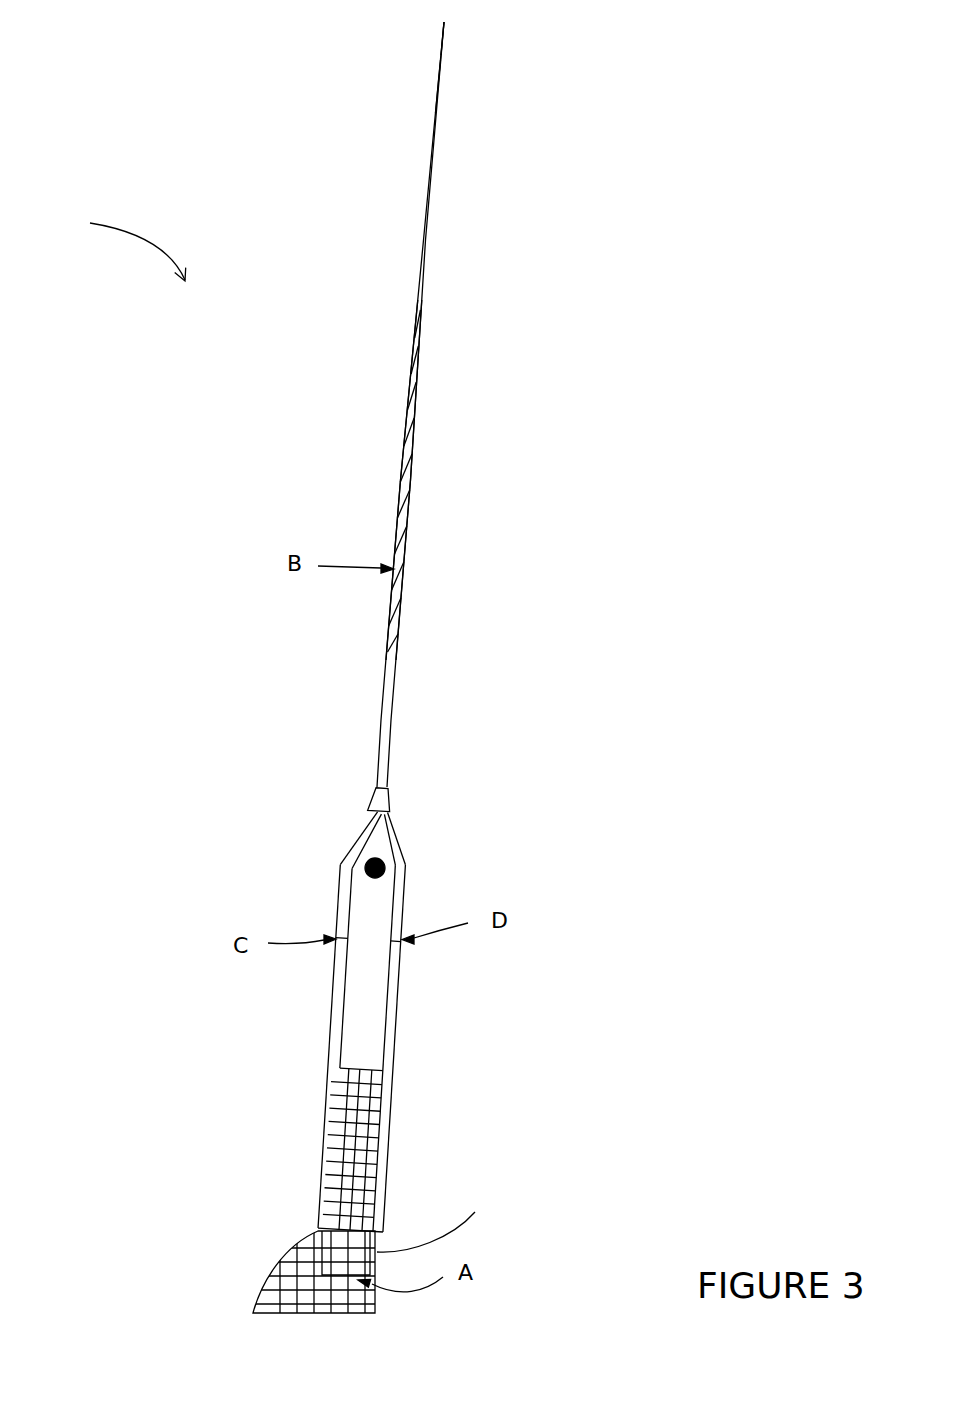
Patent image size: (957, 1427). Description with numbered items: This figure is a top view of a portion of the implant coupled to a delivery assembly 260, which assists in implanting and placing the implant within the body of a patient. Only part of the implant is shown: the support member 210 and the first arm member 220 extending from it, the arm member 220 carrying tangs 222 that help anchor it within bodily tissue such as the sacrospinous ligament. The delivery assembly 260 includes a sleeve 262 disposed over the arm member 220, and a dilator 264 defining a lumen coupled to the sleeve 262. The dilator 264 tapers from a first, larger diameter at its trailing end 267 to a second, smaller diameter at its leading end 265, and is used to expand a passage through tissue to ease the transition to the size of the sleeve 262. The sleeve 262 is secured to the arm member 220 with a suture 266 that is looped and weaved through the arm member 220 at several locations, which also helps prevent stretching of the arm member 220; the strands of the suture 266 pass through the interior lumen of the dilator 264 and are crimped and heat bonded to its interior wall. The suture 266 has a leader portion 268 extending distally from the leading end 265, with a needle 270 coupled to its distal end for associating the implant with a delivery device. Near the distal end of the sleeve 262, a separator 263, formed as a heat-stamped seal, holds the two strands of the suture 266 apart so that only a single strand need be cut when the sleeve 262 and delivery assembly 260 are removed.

The needle 270 is at (445, 24).
The leader portion 268 is at (440, 99).
The leading end 265 is at (430, 198).
The delivery assembly 260 is at (119, 240).
The dilator 264 is at (397, 640).
The trailing end 267 is at (390, 807).
The separator 263 is at (385, 868).
The sleeve 262 is at (338, 890).
The suture 266 is at (385, 1025).
The first arm member 220 is at (372, 1100).
The tangs 222 is at (332, 1158).
The support member 210 is at (277, 1290).